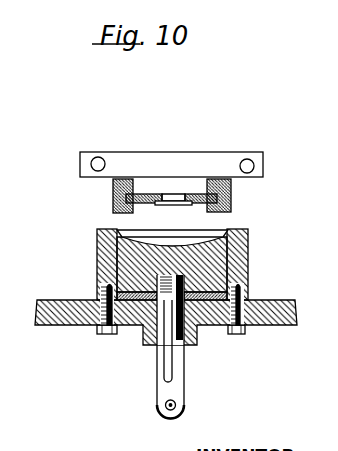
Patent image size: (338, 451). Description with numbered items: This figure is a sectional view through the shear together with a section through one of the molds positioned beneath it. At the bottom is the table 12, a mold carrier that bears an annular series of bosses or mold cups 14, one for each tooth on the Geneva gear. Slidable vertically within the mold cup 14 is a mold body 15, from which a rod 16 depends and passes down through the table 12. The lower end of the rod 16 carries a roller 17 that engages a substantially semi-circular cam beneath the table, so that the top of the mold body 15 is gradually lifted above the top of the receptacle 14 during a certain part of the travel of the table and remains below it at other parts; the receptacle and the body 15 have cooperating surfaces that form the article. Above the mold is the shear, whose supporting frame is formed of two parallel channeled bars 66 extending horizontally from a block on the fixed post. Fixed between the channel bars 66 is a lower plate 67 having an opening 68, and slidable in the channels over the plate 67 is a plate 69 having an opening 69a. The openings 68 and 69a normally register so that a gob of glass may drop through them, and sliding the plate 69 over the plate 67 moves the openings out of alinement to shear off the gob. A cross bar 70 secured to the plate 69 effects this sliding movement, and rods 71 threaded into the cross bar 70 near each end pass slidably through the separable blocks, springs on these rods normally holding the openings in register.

The table 12 is at (45, 300).
The mold cup 14 is at (250, 252).
The mold body 15 is at (245, 227).
The rod 16 is at (184, 382).
The roller 17 is at (183, 407).
The channeled bars 66 is at (113, 199).
The lower plate 67 is at (152, 204).
The opening 68 is at (183, 205).
The plate 69 is at (144, 194).
The opening 69a is at (173, 194).
The cross bar 70 is at (231, 160).
The rods 71 is at (98, 158).